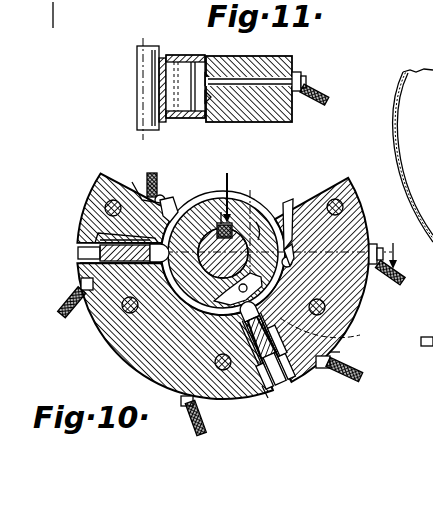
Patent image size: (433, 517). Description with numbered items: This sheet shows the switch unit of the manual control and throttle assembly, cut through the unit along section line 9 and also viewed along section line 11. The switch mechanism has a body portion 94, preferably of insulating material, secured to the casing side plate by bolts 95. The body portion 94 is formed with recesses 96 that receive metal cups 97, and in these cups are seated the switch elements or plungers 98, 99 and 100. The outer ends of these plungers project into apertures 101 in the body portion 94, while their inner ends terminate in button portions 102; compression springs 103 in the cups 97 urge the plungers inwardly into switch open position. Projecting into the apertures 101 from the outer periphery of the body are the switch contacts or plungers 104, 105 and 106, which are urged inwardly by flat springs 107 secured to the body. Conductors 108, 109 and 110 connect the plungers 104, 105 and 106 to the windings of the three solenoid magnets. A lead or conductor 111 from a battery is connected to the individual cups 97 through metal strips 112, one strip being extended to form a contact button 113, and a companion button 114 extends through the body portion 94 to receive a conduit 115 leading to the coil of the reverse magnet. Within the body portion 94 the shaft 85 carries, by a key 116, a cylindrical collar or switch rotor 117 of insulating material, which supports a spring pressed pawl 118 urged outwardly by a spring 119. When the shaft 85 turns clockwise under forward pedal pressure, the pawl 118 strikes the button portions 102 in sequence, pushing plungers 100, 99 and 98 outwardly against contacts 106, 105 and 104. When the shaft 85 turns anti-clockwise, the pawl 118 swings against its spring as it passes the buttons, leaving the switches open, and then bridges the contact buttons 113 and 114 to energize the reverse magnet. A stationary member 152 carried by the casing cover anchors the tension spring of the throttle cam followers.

In FIG. 10, the section line 9— 9 is at (64, 13).
In FIG. 10, the section line 11— 11 is at (317, 212).
In FIG. 11, the shaft 85 is at (147, 63).
In FIG. 10, the body portion 94 is at (353, 222).
In FIG. 11, the body portion 94 is at (262, 62).
In FIG. 10, the bolts 95 is at (333, 199).
In FIG. 10, the recesses 96 is at (349, 328).
In FIG. 10, the metal cups 97 is at (100, 229).
In FIG. 10, the switch element or plunger 98 is at (100, 242).
In FIG. 10, the switch element or plunger 99 is at (162, 356).
In FIG. 10, the switch element or plunger 100 is at (340, 352).
In FIG. 10, the apertures 101 is at (152, 372).
In FIG. 10, the button portions 102 is at (212, 205).
In FIG. 10, the compression springs 103 is at (135, 188).
In FIG. 10, the switch contact or plunger 104 is at (78, 253).
In FIG. 10, the switch contact or plunger 105 is at (152, 378).
In FIG. 10, the switch contact or plunger 106 is at (301, 378).
In FIG. 10, the flat springs 107 is at (95, 265).
In FIG. 10, the conductor 108 is at (58, 317).
In FIG. 10, the conductor 109 is at (195, 428).
In FIG. 10, the conductor 110 is at (361, 380).
In FIG. 10, the lead or conductor 111 is at (160, 171).
In FIG. 10, the metal strips 112 is at (172, 203).
In FIG. 10, the contact button 113 is at (291, 243).
In FIG. 11, the contact button 113 is at (207, 112).
In FIG. 11, the companion button 114 is at (212, 78).
In FIG. 10, the conductor or conduit 115 is at (382, 282).
In FIG. 11, the conductor or conduit 115 is at (328, 97).
In FIG. 10, the key 116 is at (229, 172).
In FIG. 10, the cylindrical collar or switch rotor 117 is at (221, 212).
In FIG. 11, the cylindrical collar or switch rotor 117 is at (163, 58).
In FIG. 10, the spring pressed pawl 118 is at (257, 222).
In FIG. 11, the spring pressed pawl 118 is at (185, 89).
In FIG. 10, the spring 119 is at (238, 293).
In FIG. 10, the stationary member 152 is at (413, 207).